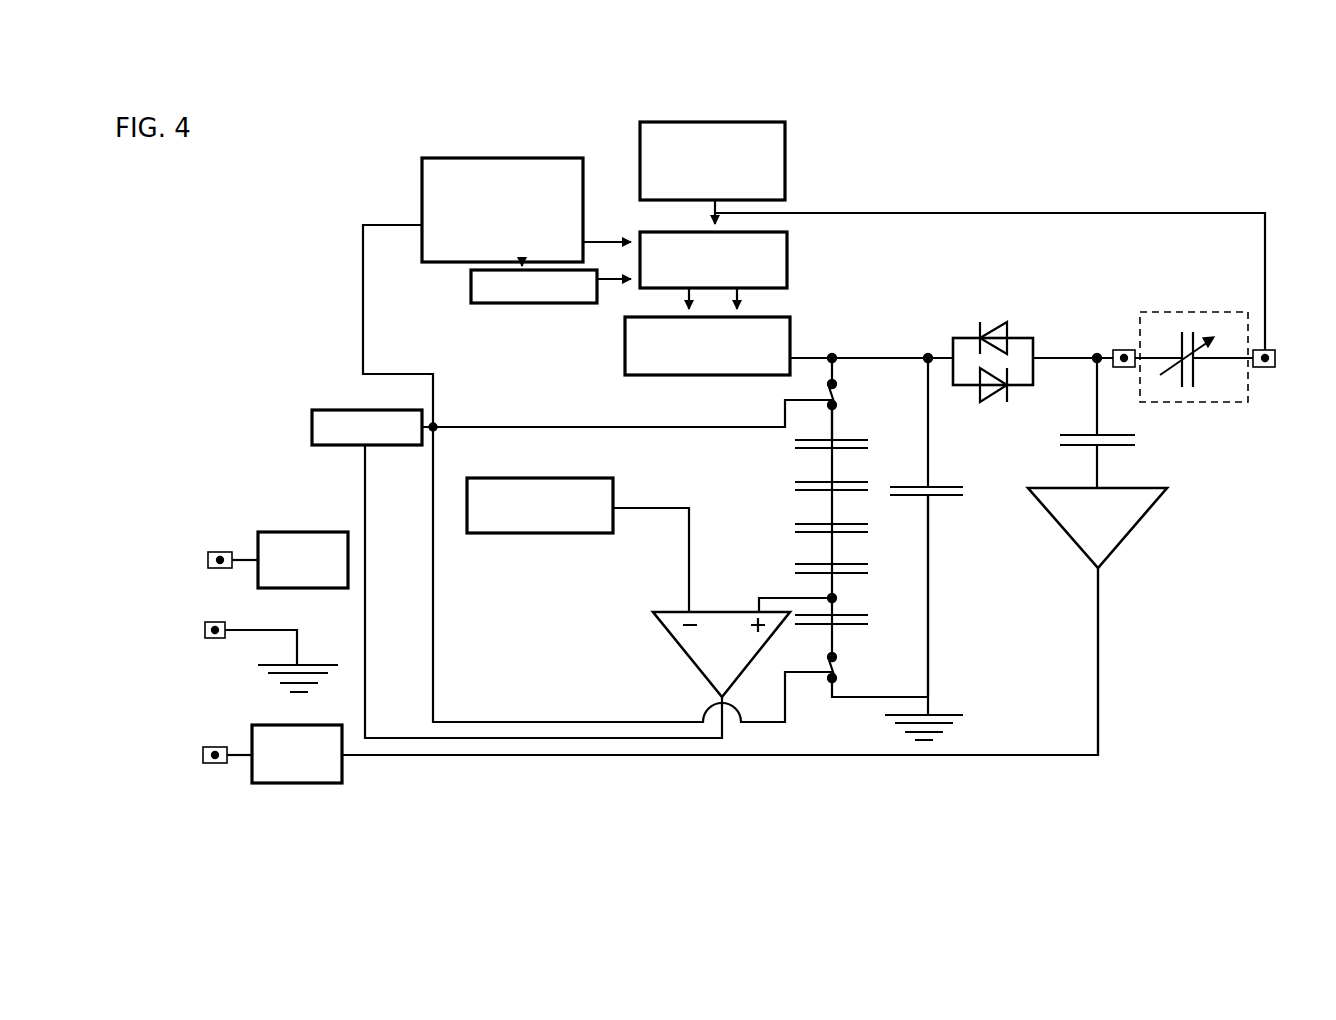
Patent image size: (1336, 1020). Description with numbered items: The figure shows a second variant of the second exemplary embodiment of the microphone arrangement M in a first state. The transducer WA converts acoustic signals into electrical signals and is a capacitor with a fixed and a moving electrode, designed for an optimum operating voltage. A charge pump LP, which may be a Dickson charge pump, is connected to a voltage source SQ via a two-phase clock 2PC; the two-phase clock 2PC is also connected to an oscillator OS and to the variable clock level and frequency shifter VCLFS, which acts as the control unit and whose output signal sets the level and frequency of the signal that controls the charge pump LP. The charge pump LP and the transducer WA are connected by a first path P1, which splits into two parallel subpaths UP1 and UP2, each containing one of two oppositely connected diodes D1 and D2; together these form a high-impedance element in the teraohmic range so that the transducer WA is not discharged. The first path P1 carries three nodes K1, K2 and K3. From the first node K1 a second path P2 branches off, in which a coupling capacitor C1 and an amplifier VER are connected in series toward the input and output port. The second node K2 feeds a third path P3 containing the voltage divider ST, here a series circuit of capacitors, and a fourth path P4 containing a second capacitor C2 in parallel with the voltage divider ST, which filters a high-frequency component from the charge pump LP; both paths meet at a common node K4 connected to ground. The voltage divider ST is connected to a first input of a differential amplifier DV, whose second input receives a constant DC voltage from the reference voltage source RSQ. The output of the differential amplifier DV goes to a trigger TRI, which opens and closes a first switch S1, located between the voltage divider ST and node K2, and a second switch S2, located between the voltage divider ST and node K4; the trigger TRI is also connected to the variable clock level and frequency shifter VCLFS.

The microphone arrangement M is at (213, 317).
The variable clock level and frequency shifter VCLFS is at (440, 179).
The oscillator OS is at (577, 292).
The voltage source SQ is at (770, 163).
The two-phase clock 2PC is at (677, 257).
The charge pump LP is at (675, 347).
The trigger TRI is at (337, 427).
The reference voltage source RSQ is at (493, 508).
The first path P1 is at (890, 358).
The second path P2 is at (1098, 645).
The third path P3 is at (830, 384).
The fourth path P4 is at (931, 565).
The first node K1 is at (1100, 365).
The second node K2 is at (832, 358).
The third node K3 is at (928, 360).
The common node K4 is at (935, 698).
The first switch S1 is at (828, 405).
The second switch S2 is at (830, 672).
The voltage divider ST is at (807, 533).
The differential amplifier DV is at (707, 650).
The first subpath UP1 is at (977, 337).
The second subpath UP2 is at (1046, 393).
The first diode D1 is at (998, 333).
The second diode D2 is at (990, 387).
The coupling capacitor C1 is at (1120, 441).
The second capacitor C2 is at (953, 498).
The transducer WA is at (1200, 400).
The amplifier VER is at (1117, 522).